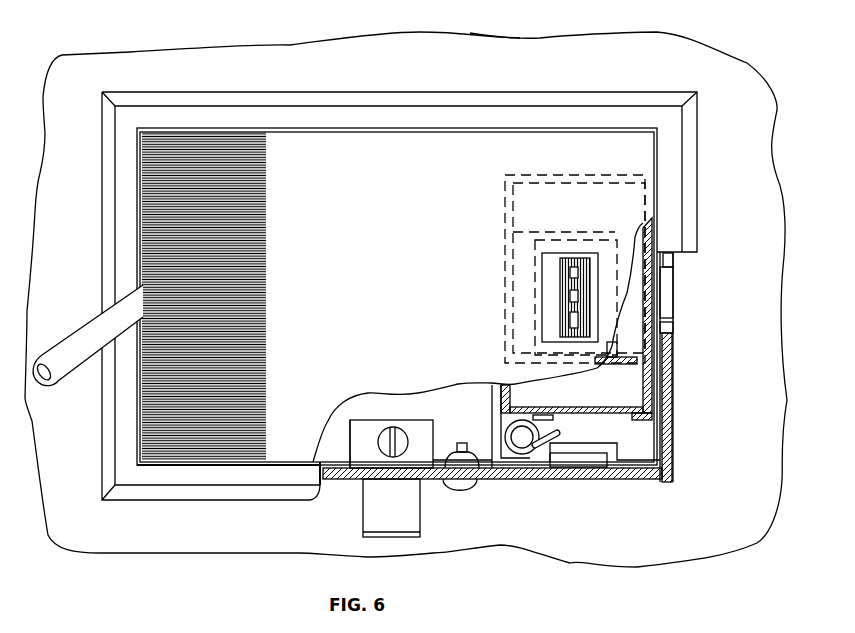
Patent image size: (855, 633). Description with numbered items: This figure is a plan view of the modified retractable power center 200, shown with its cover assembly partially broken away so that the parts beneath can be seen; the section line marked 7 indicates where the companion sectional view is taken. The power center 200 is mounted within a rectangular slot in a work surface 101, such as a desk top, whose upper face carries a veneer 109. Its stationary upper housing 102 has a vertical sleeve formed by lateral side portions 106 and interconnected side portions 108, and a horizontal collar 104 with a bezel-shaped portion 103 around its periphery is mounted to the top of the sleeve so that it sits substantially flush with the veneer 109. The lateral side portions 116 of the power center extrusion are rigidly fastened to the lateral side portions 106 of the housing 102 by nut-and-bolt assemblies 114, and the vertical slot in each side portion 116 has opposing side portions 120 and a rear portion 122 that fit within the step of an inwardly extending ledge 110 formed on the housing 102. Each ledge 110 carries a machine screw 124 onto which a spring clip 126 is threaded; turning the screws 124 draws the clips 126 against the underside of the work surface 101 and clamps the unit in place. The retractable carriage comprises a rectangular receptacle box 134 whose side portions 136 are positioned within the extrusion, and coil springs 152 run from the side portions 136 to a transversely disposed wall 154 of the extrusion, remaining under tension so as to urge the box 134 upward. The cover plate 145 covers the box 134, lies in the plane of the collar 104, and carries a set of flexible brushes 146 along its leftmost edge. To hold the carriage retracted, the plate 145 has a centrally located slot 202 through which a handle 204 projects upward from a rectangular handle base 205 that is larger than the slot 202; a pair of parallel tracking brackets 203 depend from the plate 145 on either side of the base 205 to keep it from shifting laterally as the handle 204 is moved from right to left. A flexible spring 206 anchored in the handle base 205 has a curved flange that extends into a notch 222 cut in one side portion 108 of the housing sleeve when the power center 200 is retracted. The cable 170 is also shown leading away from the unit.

The work surface 101 is at (502, 35).
The upper housing 102 is at (156, 90).
The bezel-shaped portion 103 is at (102, 140).
The collar 104 is at (289, 118).
The lateral side portion 106 is at (598, 483).
The side portion 108 is at (673, 407).
The veneer 109 is at (723, 138).
The inwardly extending ledge 110 is at (448, 420).
The nut-and-bolt assembly 114 is at (463, 490).
The lateral side portion of extrusion 116 is at (643, 461).
The side portion of slot 120 is at (347, 438).
The rear portion of slot 122 is at (392, 419).
The machine screw 124 is at (378, 433).
The spring clip 126 is at (363, 508).
The receptacle box 134 is at (503, 204).
The side portion of box 136 is at (508, 388).
The cover plate 145 is at (380, 235).
The flexible brushes 146 is at (232, 150).
The coil spring 152 is at (525, 456).
The transversely disposed wall 154 is at (572, 410).
The cable 170 is at (73, 356).
The power center 200 is at (713, 66).
The slot 202 is at (548, 298).
The tracking bracket 203 is at (540, 232).
The handle 204 is at (562, 276).
The handle base 205 is at (618, 343).
The flexible spring 206 is at (604, 240).
The notch 222 is at (668, 262).
The section line 7- 7 is at (90, 296).